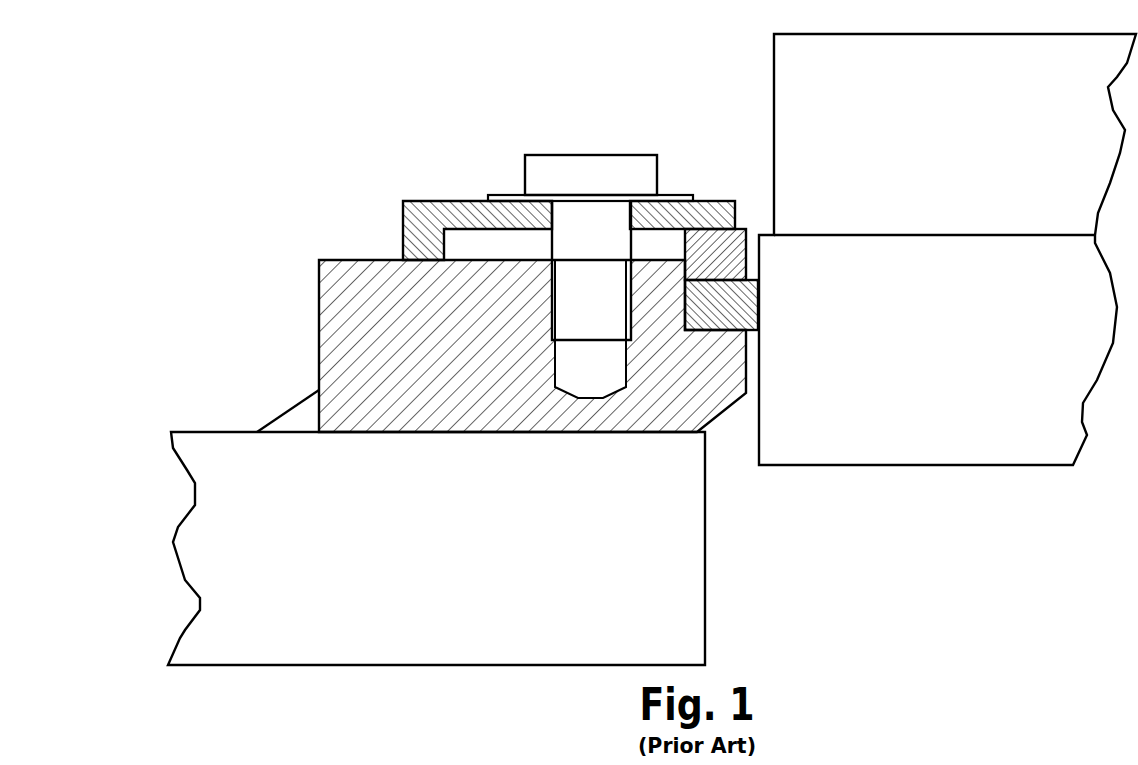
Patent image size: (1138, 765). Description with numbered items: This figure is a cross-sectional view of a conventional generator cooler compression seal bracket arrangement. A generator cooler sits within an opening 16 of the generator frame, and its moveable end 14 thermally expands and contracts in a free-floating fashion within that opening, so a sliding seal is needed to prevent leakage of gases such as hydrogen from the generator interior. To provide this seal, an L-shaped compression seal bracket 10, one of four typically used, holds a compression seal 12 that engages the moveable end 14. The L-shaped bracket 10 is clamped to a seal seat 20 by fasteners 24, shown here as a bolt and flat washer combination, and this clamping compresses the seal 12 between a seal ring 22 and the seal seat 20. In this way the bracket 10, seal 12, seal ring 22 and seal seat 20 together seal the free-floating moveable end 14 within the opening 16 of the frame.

The L-shaped compression seal bracket 10 is at (450, 218).
The compression seal 12 is at (759, 303).
The moveable end 14 is at (983, 320).
The opening 16 is at (705, 505).
The seal seat 20 is at (677, 372).
The seal ring 22 is at (733, 253).
The fastener 24 is at (590, 215).